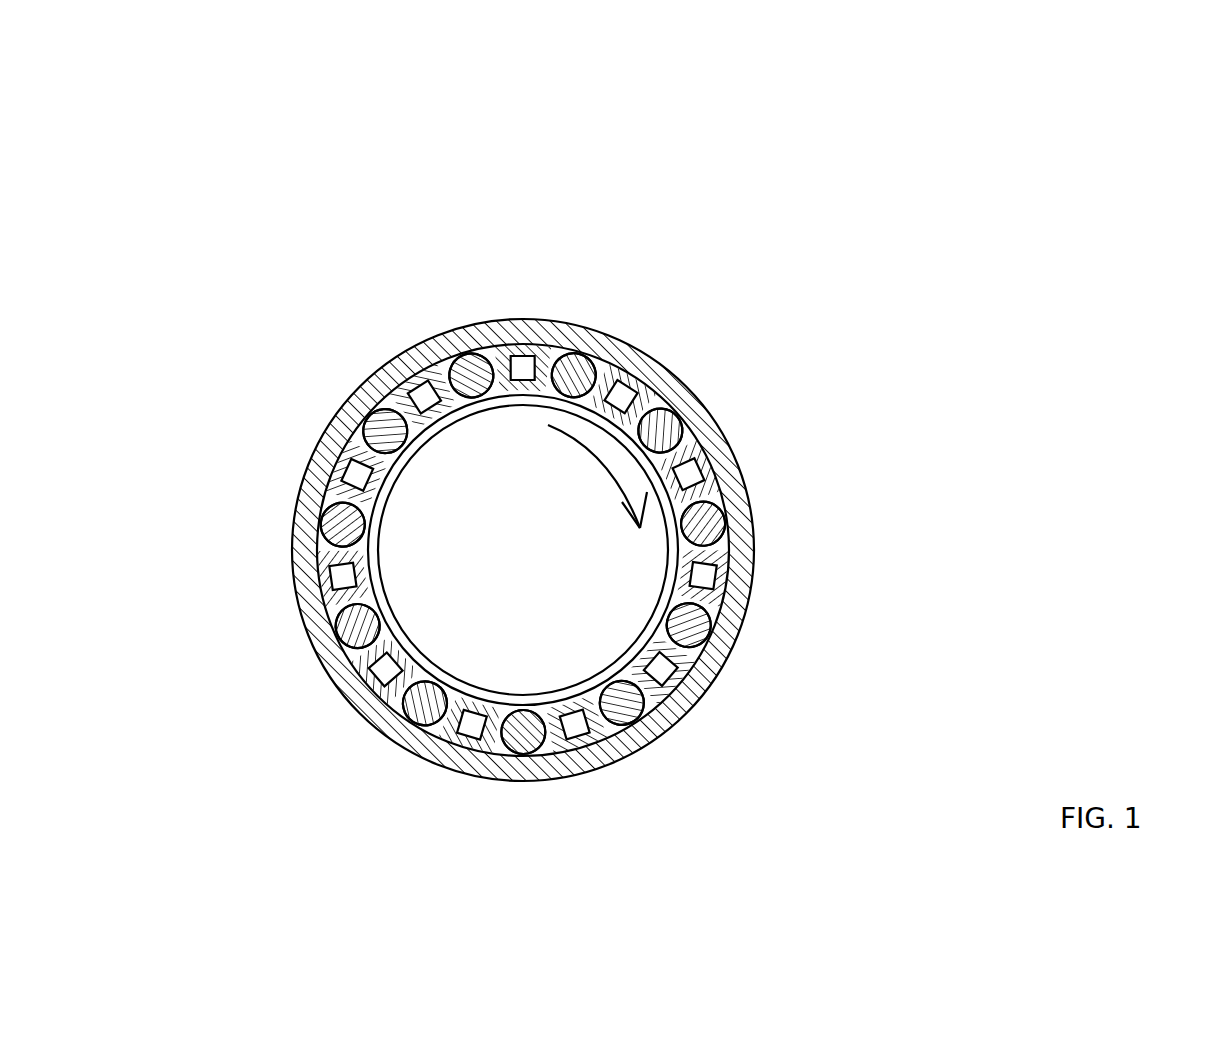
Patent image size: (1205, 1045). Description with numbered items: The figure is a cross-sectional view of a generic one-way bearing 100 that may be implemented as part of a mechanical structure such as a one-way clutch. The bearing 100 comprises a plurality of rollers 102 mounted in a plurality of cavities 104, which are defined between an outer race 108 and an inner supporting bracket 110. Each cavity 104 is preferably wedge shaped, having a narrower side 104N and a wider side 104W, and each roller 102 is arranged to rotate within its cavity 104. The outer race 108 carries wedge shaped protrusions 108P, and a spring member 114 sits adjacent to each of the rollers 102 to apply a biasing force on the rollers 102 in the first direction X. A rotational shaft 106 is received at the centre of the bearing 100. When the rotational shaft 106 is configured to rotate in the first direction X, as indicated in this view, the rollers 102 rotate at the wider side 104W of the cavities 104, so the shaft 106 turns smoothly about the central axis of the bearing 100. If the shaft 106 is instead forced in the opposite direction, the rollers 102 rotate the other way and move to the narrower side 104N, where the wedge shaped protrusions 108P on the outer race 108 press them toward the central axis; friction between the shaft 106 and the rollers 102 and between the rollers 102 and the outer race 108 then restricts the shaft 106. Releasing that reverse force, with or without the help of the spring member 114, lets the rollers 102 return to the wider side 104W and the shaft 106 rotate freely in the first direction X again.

The one-way bearing 100 is at (993, 86).
The rollers 102 is at (708, 409).
The cavities 104 is at (548, 395).
The narrower side 104N is at (378, 667).
The wider side 104W is at (402, 708).
The rotational shaft 106 is at (406, 352).
The outer race 108 is at (672, 392).
The wedge shaped protrusions 108P is at (308, 572).
The inner supporting bracket 110 is at (752, 556).
The spring member 114 is at (705, 590).